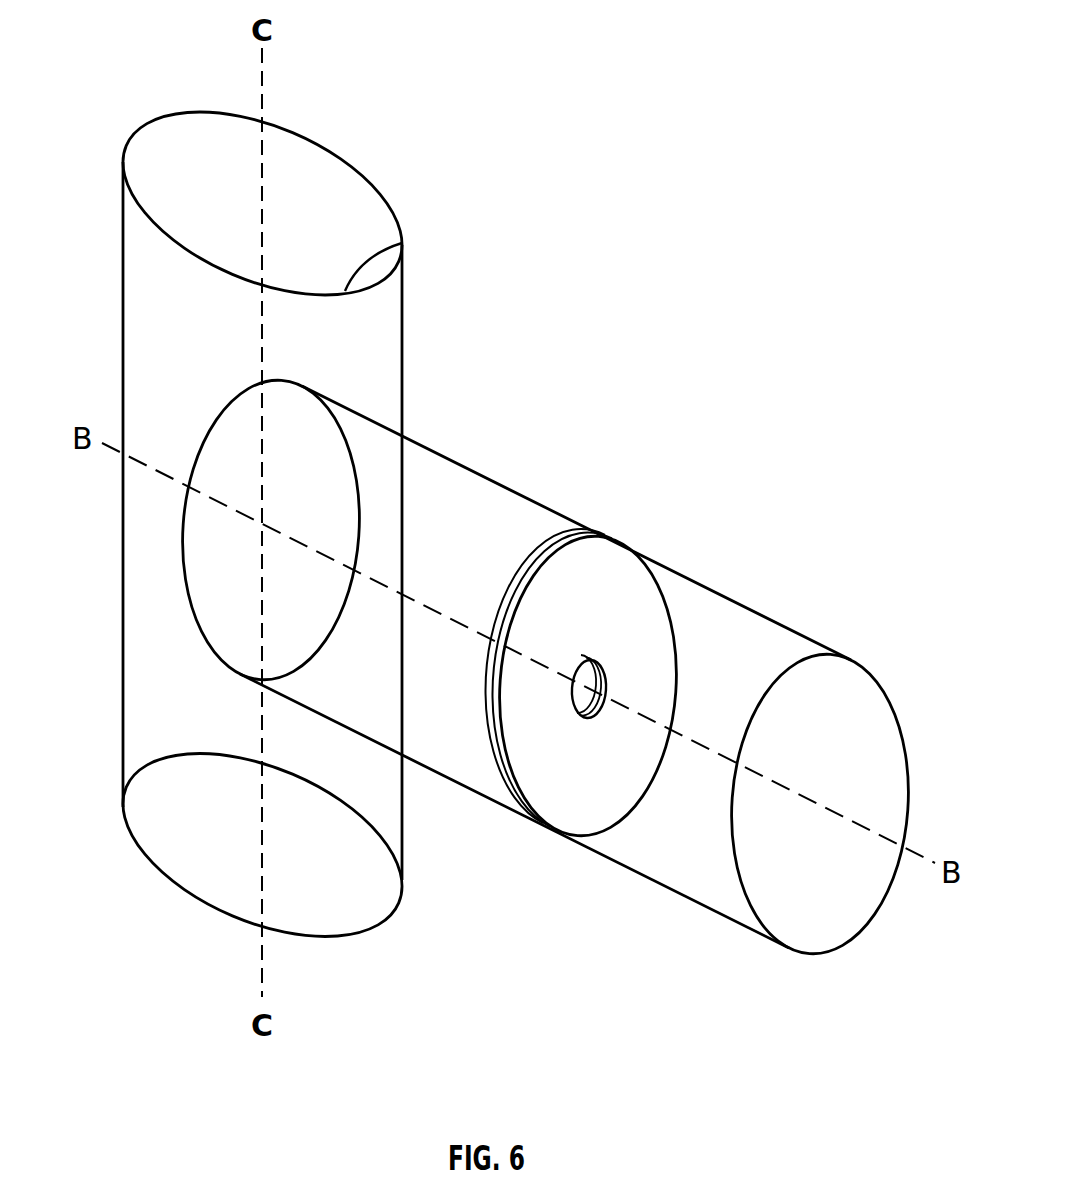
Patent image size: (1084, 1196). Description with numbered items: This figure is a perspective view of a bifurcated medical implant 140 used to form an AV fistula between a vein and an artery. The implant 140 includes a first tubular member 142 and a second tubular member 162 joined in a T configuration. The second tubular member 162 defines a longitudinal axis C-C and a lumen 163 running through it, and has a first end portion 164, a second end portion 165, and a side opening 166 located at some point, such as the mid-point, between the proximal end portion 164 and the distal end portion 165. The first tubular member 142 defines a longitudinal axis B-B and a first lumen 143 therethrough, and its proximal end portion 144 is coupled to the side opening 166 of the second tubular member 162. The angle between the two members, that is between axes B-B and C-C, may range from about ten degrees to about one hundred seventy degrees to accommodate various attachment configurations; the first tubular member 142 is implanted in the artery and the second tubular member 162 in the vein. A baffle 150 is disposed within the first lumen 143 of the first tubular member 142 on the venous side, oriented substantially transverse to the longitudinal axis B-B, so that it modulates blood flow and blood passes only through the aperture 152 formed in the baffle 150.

The bifurcated medical implant 140 is at (700, 66).
The first tubular member 142 is at (745, 603).
The first lumen 143 is at (773, 658).
The proximal end portion 144 is at (352, 457).
The baffle 150 is at (607, 572).
The aperture 152 is at (588, 688).
The second tubular member 162 is at (123, 293).
The lumen 163 is at (320, 177).
The first end portion 164 is at (402, 897).
The second end portion 165 is at (402, 243).
The side opening 166 is at (282, 533).